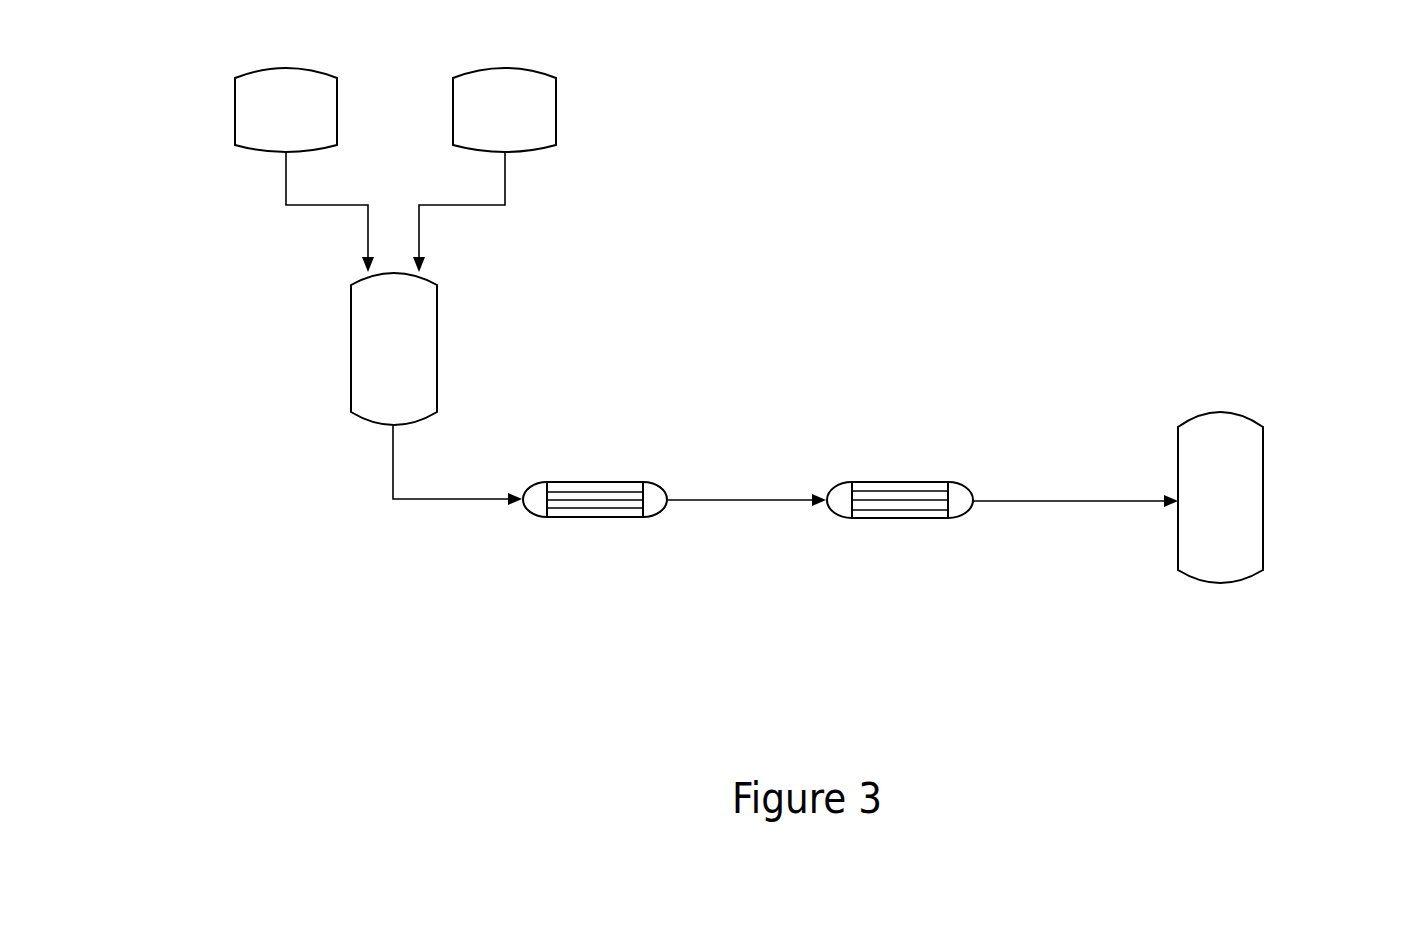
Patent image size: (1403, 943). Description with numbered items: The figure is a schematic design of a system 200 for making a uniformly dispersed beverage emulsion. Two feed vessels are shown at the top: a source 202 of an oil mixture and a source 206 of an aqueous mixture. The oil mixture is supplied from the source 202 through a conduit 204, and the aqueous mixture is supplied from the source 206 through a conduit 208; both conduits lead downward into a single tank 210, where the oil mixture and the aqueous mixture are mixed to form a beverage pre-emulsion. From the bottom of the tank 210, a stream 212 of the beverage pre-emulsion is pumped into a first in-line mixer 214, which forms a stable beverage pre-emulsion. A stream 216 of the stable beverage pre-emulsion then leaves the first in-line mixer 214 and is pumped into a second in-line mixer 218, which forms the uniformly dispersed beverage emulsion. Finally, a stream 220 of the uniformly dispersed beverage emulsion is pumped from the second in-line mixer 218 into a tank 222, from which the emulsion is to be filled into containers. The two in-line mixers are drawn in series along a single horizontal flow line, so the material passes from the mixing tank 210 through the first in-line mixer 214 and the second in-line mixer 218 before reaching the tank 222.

The system 200 is at (782, 190).
The source of an oil mixture 202 is at (233, 112).
The conduit 204 is at (283, 187).
The source of an aqueous mixture 206 is at (557, 118).
The conduit 208 is at (506, 188).
The tank 210 is at (437, 362).
The stream of the beverage pre-emulsion 212 is at (452, 502).
The first in-line mixer 214 is at (595, 480).
The stream of the stable beverage pre-emulsion 216 is at (757, 500).
The second in-line mixer 218 is at (890, 482).
The stream of the uniformly dispersed beverage emulsion 220 is at (1095, 501).
The tank 222 is at (1263, 498).